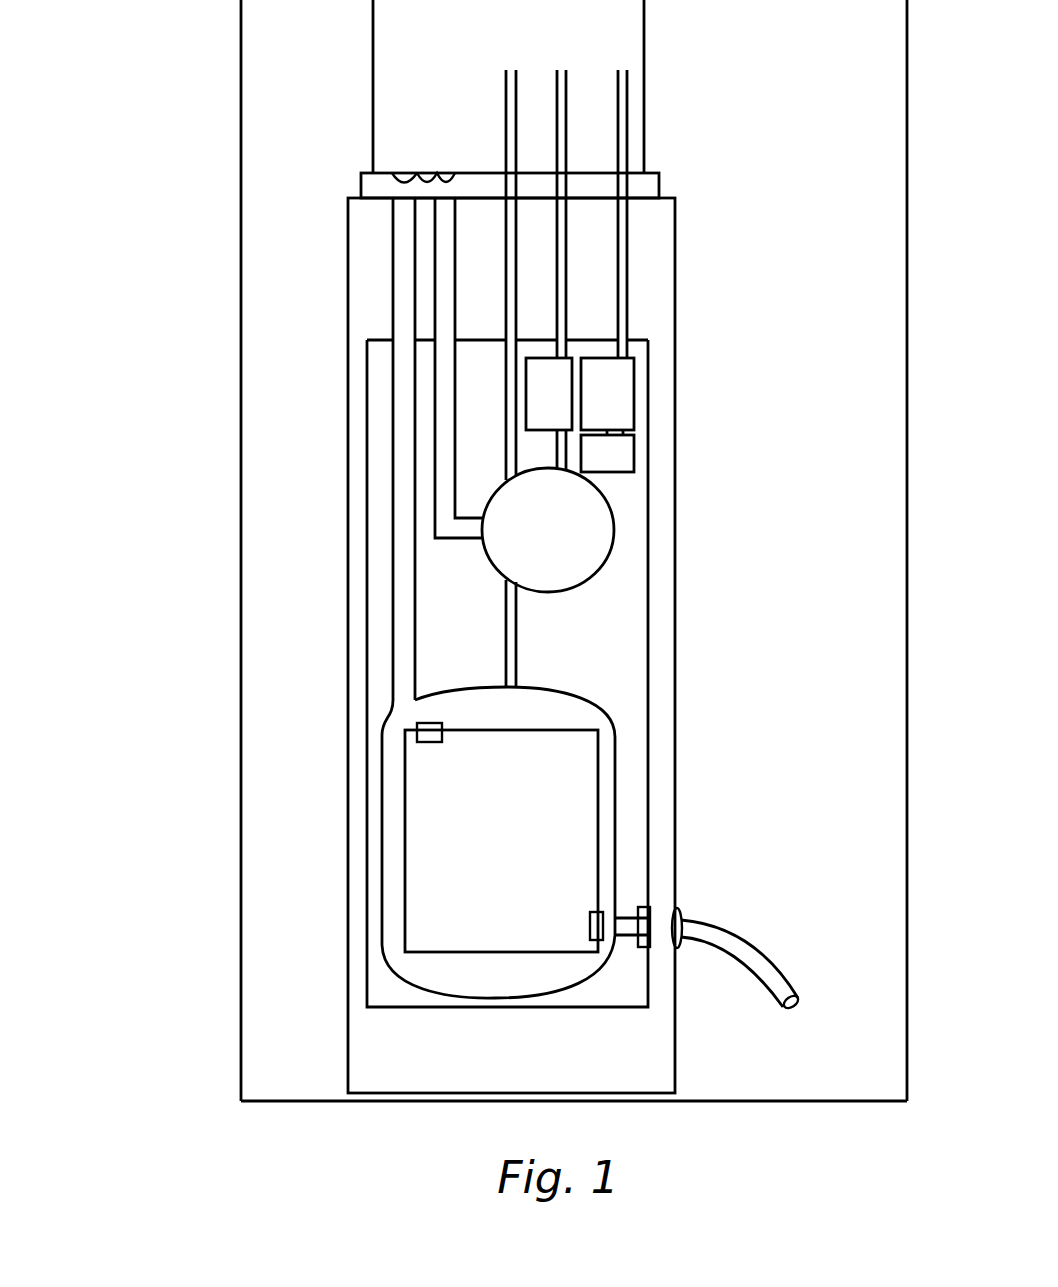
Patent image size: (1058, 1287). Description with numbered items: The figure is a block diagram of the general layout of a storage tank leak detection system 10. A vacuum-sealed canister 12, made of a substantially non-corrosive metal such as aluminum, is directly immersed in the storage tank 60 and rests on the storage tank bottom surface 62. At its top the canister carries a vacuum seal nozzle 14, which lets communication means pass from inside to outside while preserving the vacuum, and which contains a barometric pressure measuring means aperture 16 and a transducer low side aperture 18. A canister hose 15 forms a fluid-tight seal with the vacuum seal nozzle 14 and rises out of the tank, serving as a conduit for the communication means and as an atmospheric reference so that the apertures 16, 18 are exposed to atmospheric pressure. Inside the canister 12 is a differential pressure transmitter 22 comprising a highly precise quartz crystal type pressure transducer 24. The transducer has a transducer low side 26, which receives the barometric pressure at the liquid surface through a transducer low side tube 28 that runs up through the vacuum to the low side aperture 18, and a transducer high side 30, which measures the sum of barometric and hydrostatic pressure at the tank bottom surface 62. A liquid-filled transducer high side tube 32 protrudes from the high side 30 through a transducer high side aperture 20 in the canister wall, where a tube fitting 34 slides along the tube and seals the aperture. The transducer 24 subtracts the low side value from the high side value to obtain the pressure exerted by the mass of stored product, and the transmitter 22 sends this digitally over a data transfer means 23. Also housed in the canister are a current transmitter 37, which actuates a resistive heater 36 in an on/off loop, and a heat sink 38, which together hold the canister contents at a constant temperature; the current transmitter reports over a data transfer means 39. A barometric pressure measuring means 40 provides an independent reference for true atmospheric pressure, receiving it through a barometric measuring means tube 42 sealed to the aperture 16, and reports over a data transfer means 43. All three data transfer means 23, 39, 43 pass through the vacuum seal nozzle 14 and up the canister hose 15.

The storage tank leak detection system 10 is at (195, 160).
The vacuum-sealed canister 12 is at (677, 408).
The vacuum seal nozzle 14 is at (653, 183).
The canister hose 15 is at (643, 70).
The barometric pressure measuring means aperture 16 is at (457, 175).
The transducer low side aperture 18 is at (392, 175).
The transducer high side aperture 20 is at (683, 913).
The differential pressure transmitter 22 is at (547, 688).
The data transfer means 23 is at (517, 648).
The quartz crystal type pressure transducer 24 is at (501, 841).
The transducer low side 26 is at (428, 742).
The transducer low side tube 28 is at (410, 595).
The transducer high side 30 is at (590, 927).
The transducer high side tube 32 is at (752, 960).
The tube fitting 34 is at (638, 943).
The resistive heater 36 is at (549, 394).
The current transmitter 37 is at (607, 396).
The heat sink 38 is at (607, 453).
The data transfer means 39 is at (627, 288).
The barometric pressure measuring means 40 is at (548, 530).
The barometric measuring means tube 42 is at (448, 312).
The data transfer means 43 is at (566, 290).
The storage tank 60 is at (574, 550).
The storage tank bottom surface 62 is at (793, 1102).